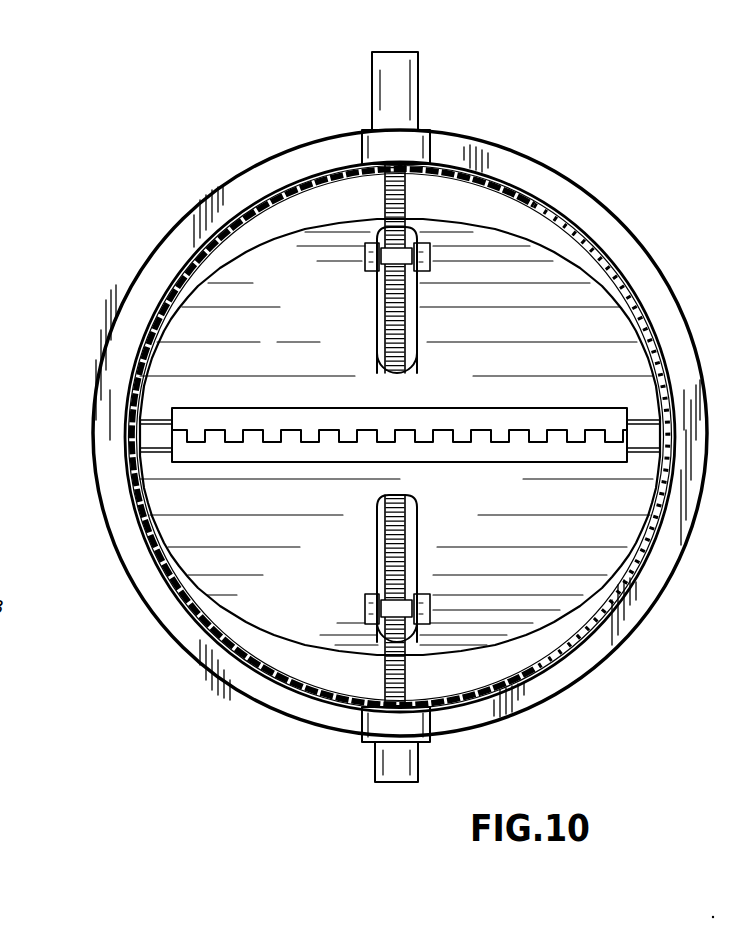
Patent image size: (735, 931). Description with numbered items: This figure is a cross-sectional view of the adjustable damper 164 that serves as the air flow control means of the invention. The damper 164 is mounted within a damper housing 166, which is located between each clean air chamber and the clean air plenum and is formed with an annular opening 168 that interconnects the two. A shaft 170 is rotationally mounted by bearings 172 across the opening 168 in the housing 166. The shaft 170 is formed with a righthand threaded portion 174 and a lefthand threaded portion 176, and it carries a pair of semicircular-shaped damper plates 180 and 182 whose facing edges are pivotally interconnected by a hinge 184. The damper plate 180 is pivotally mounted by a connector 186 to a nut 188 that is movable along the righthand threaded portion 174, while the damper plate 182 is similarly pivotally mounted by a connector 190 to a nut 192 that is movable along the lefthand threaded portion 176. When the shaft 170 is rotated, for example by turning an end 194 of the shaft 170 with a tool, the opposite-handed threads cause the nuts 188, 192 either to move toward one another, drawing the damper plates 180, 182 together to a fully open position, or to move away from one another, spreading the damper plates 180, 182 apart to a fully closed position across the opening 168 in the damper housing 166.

The adjustable damper 164 is at (314, 670).
The damper housing 166 is at (576, 658).
The annular opening 168 is at (585, 622).
The shaft 170 is at (409, 333).
The bearings 172 is at (412, 147).
The righthand threaded portion 174 is at (407, 198).
The lefthand threaded portion 176 is at (410, 533).
The damper plate 180 is at (312, 341).
The damper plate 182 is at (561, 543).
The hinge 184 is at (455, 450).
The connector 186 is at (432, 270).
The nut 188 is at (403, 256).
The connector 190 is at (432, 592).
The nut 192 is at (393, 606).
The end of shaft 194 is at (420, 54).